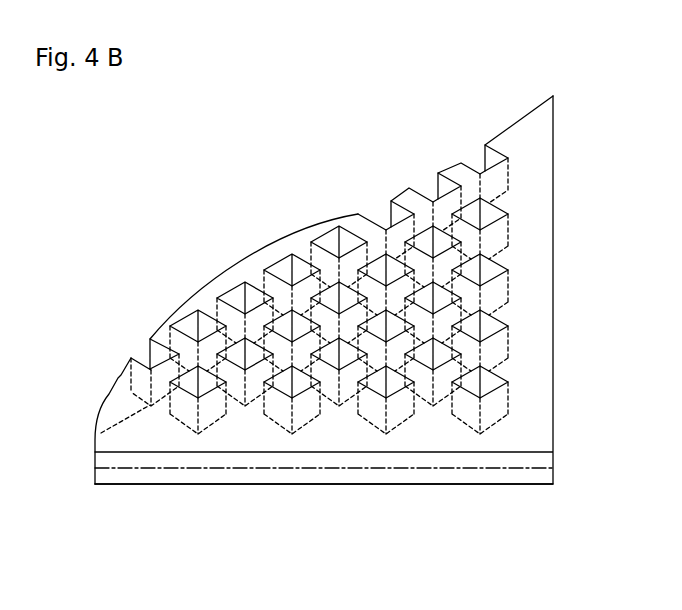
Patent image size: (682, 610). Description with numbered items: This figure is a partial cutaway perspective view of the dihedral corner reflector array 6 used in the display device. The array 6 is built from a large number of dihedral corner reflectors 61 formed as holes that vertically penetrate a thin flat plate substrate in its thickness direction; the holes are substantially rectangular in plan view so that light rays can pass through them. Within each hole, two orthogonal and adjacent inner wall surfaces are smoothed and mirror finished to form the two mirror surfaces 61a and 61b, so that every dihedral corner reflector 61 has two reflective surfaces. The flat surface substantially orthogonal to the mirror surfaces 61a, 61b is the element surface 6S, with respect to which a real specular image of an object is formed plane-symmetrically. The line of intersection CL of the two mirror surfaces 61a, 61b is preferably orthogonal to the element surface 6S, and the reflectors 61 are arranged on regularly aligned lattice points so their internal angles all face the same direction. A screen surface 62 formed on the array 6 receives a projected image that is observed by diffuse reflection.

The dihedral corner reflector array 6 is at (528, 116).
The element surface 6S is at (158, 467).
The dihedral corner reflector 61 is at (376, 389).
The mirror surface 61a is at (300, 377).
The mirror surface 61b is at (293, 377).
The screen surface 62 is at (527, 188).
The line of intersection CL is at (503, 340).